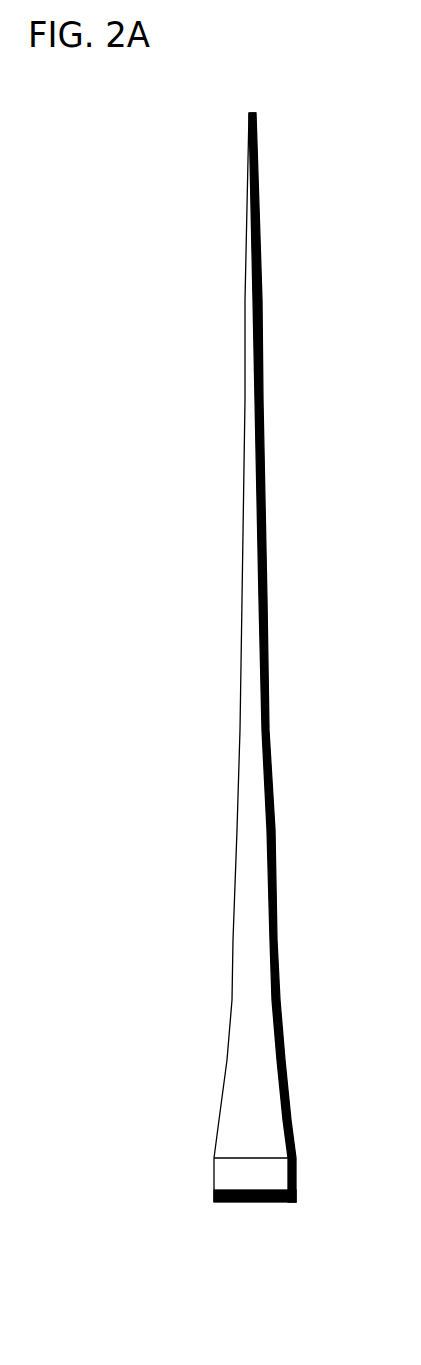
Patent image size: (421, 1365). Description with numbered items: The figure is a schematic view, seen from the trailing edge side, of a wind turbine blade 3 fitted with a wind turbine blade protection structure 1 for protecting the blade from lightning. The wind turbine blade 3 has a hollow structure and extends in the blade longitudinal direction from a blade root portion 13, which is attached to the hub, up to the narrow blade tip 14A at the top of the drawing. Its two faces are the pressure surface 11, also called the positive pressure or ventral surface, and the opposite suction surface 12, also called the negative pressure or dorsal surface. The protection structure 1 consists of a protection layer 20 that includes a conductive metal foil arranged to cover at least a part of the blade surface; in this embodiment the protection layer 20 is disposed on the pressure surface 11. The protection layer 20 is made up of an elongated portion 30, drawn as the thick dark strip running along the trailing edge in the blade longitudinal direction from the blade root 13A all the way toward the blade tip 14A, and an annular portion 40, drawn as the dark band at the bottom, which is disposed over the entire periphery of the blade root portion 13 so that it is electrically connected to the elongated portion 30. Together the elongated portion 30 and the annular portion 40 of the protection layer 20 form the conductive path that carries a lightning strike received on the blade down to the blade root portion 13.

The wind turbine blade protection structure 1 is at (200, 133).
The wind turbine blade 3 is at (250, 882).
The pressure surface 11 is at (261, 633).
The suction surface 12 is at (241, 637).
The blade root portion 13 is at (218, 1178).
The blade root 13A is at (229, 1203).
The blade tip 14A is at (255, 112).
The protection layer 20 is at (236, 658).
The elongated portion 30 is at (268, 695).
The annular portion 40 is at (214, 1198).